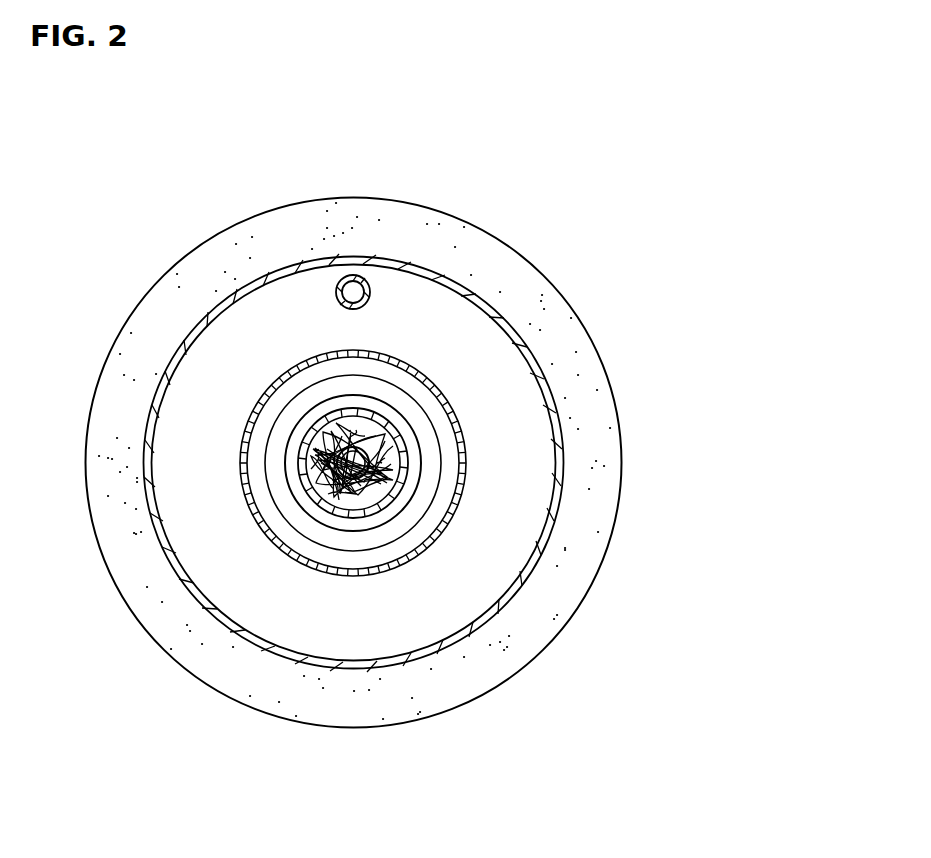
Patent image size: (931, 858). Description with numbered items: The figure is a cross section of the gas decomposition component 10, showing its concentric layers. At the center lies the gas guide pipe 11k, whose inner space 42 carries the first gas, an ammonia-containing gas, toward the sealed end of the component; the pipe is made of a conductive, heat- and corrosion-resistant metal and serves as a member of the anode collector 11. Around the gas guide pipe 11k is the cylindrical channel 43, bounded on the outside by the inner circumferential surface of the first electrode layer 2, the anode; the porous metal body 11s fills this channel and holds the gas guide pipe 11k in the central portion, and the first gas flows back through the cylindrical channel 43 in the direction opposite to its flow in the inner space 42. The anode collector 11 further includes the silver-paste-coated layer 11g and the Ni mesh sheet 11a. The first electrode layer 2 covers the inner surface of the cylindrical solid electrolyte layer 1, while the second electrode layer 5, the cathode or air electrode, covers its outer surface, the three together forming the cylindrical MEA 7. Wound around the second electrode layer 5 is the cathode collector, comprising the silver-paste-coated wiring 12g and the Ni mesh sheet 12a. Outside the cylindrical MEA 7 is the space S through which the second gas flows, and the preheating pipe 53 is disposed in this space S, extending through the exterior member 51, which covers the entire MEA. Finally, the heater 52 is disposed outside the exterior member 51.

The heater 52 is at (467, 247).
The exterior member 51 is at (420, 262).
The preheating pipe 53 is at (353, 275).
The space S is at (527, 520).
The gas decomposition component 10 is at (250, 368).
The Ni mesh sheet 12a is at (383, 353).
The silver-paste-coated wiring 12g is at (307, 357).
The second electrode layer 5 is at (447, 435).
The solid electrolyte layer 1 is at (432, 458).
The first electrode layer 2 is at (413, 473).
The cylindrical MEA 7 is at (514, 420).
The inner space 42 is at (312, 488).
The anode collector 11 is at (387, 622).
The cylindrical channel 43 is at (310, 460).
The Ni mesh sheet 11a is at (413, 490).
The gas guide pipe 11k is at (370, 505).
The porous metal body 11s is at (392, 508).
The silver-paste-coated layer 11g is at (338, 512).